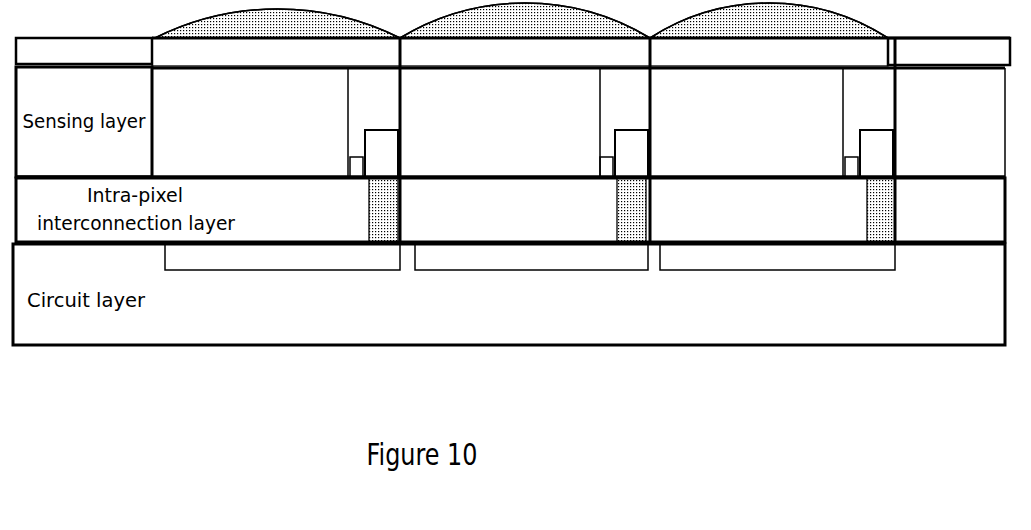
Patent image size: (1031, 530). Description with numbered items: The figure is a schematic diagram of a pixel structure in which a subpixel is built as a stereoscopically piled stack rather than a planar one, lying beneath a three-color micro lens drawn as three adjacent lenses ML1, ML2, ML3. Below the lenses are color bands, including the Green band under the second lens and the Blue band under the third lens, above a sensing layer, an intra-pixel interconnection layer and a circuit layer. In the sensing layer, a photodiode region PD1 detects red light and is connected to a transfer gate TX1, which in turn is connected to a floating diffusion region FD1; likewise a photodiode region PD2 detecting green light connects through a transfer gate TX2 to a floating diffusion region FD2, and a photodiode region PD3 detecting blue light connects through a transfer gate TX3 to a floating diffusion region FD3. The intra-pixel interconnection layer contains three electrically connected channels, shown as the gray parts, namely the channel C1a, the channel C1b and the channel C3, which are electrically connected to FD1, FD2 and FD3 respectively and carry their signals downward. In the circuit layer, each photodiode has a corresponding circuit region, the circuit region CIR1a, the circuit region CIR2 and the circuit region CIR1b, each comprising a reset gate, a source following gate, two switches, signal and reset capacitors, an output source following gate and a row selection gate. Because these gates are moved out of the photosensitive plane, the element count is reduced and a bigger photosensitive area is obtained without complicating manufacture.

The micro lens ML1 is at (277, 23).
The micro lens ML2 is at (525, 20).
The micro lens ML3 is at (769, 20).
The green color filter band Green is at (525, 52).
The blue color filter band Blue is at (769, 52).
The photodiode region PD1 is at (250, 122).
The photodiode region PD2 is at (500, 122).
The photodiode region PD3 is at (746, 122).
The transfer gate TX1 is at (349, 178).
The transfer gate TX2 is at (602, 178).
The transfer gate TX3 is at (845, 178).
The floating diffusion region FD1 is at (381, 153).
The floating diffusion region FD2 is at (631, 153).
The floating diffusion region FD3 is at (876, 153).
The channel C1a is at (393, 210).
The channel C1b is at (645, 210).
The channel C3 is at (891, 210).
The circuit region CIR1a is at (282, 257).
The circuit region CIR2 is at (531, 257).
The circuit region CIR1b is at (777, 257).